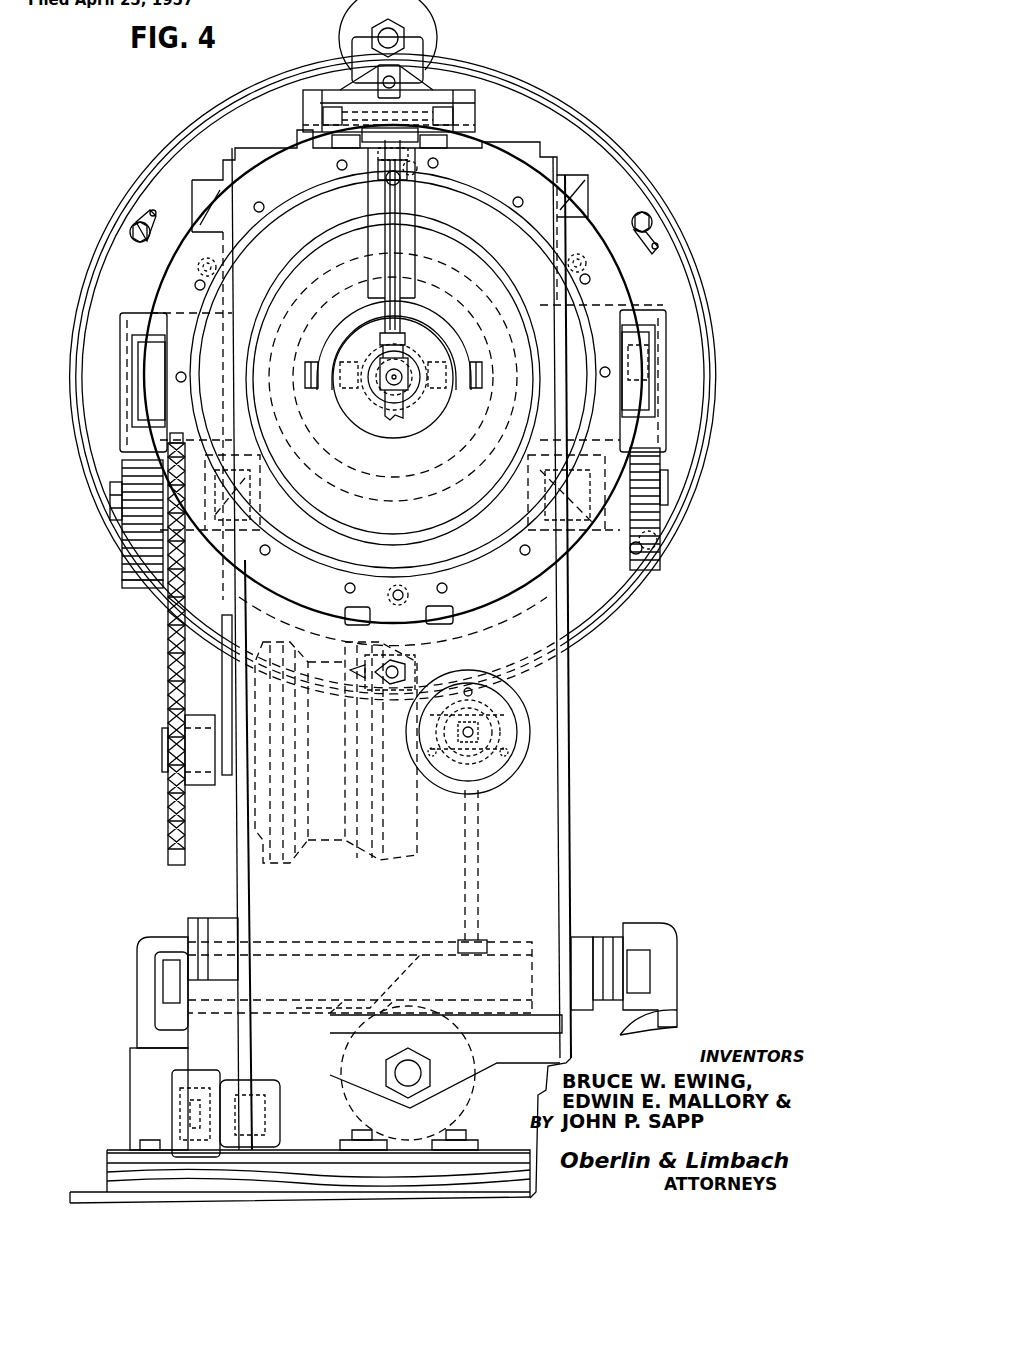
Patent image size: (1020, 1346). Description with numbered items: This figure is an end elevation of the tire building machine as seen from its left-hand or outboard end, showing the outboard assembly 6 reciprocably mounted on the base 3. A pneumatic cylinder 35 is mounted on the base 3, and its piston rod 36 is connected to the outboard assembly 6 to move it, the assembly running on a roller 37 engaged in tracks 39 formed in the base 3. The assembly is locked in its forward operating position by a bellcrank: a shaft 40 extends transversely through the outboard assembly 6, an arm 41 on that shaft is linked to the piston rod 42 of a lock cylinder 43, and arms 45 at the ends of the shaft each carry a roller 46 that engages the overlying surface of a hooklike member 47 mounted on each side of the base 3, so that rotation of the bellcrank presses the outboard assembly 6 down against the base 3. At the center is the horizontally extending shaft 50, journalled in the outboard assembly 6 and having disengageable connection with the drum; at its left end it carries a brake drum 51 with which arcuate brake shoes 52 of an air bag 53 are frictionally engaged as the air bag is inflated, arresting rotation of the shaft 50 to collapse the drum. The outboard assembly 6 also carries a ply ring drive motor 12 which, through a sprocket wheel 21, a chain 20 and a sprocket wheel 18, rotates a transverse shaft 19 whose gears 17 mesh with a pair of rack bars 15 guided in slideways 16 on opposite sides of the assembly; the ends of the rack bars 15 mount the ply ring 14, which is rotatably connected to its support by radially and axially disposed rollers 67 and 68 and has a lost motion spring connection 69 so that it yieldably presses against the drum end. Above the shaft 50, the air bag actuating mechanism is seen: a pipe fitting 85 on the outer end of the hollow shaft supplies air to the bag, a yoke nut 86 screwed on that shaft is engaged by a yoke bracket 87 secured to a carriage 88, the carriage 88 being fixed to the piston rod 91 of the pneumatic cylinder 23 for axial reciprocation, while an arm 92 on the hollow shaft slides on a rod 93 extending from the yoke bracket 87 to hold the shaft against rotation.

The base 3 is at (78, 1192).
The outboard assembly 6 is at (574, 805).
The ply ring drive motor 12 is at (390, 862).
The ply ring 14 is at (577, 110).
The rack bars 15 is at (143, 410).
The slideways 16 is at (150, 312).
The gears 17 is at (135, 578).
The sprocket wheel 18 is at (150, 535).
The transverse shaft 19 is at (115, 490).
The chain 20 is at (175, 640).
The sprocket wheel 21 is at (168, 822).
The pneumatic cylinder 23 is at (432, 22).
The pneumatic cylinder 35 is at (468, 1120).
The piston rod 36 is at (412, 1073).
The roller 37 is at (185, 1142).
The tracks 39 is at (213, 1062).
The shaft 40 is at (302, 955).
The arm 41 is at (480, 886).
The piston rod 42 is at (495, 735).
The lock cylinder 43 is at (490, 780).
The arms 45 is at (205, 950).
The roller 46 is at (170, 975).
The hooklike member 47 is at (140, 1020).
The shaft 50 is at (410, 385).
The brake drum 51 is at (445, 270).
The brake shoes 52 is at (470, 323).
The air bag 53 is at (530, 248).
The rollers 67 is at (337, 152).
The rollers 68 is at (592, 268).
The lost motion spring connection 69 is at (150, 212).
The pipe fitting 85 is at (383, 388).
The yoke nut 86 is at (400, 432).
The yoke bracket 87 is at (370, 287).
The carriage 88 is at (433, 115).
The piston rod 91 is at (380, 38).
The arm 92 is at (404, 278).
The rod 93 is at (388, 180).